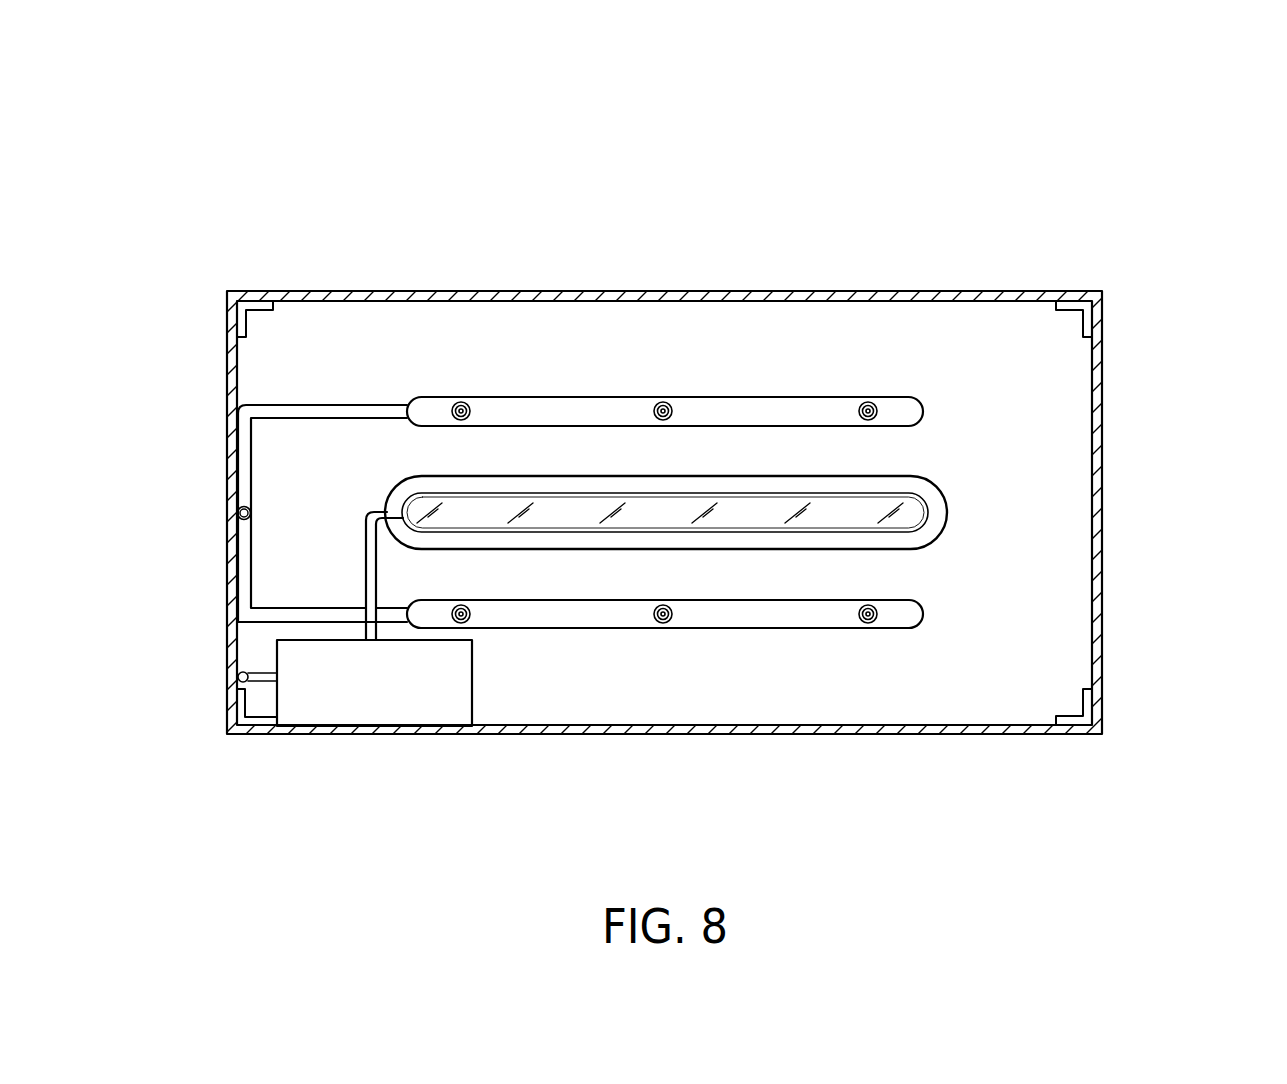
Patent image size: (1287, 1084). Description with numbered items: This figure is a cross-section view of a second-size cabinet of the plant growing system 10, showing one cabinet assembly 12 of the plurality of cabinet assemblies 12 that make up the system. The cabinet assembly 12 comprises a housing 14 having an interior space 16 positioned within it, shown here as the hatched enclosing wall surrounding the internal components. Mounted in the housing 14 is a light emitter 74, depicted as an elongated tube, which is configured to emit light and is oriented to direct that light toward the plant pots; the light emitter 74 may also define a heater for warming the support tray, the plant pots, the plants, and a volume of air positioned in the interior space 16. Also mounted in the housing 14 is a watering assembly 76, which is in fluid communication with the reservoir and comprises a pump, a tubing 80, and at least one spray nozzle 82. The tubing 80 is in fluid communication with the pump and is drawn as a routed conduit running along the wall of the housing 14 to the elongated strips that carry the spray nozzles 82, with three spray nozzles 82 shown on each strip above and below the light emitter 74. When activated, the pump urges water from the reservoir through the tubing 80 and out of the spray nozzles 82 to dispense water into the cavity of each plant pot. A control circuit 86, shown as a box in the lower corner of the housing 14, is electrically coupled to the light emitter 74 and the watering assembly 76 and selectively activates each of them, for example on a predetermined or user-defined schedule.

The plant growing system 10 is at (1058, 140).
The cabinet assembly 12 is at (1124, 226).
The housing 14 is at (1168, 434).
The interior space 16 is at (517, 341).
The light emitter 74 is at (898, 512).
The watering assembly 76 is at (968, 632).
The tubing 80 is at (336, 407).
The spray nozzle 82 is at (461, 400).
The control circuit 86 is at (365, 693).